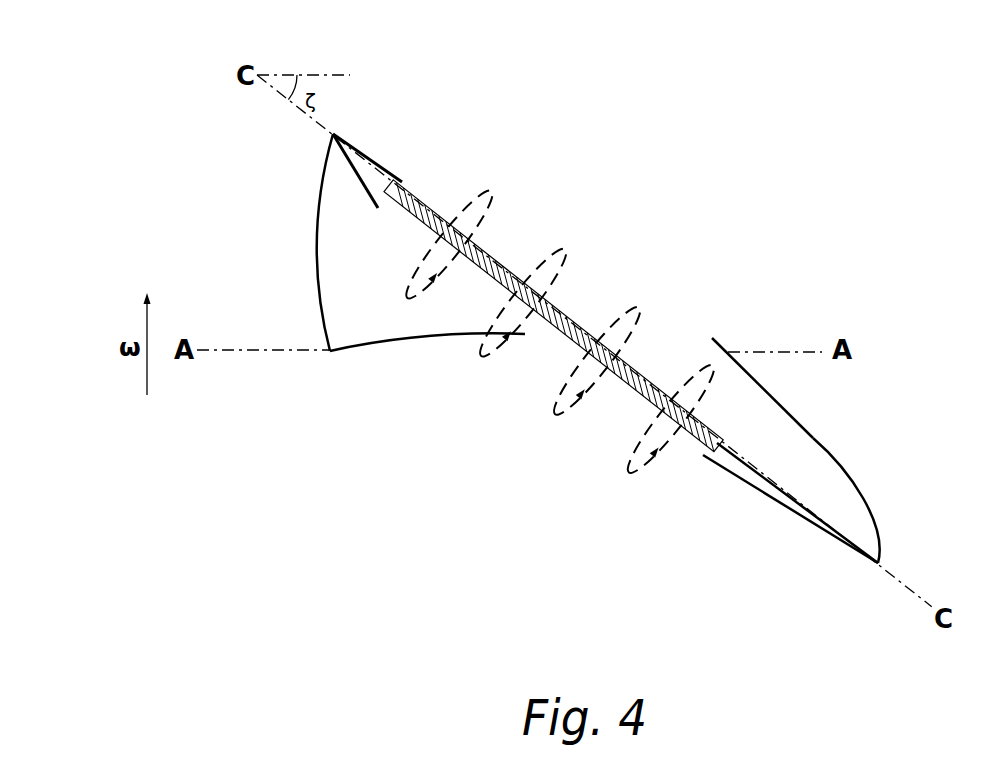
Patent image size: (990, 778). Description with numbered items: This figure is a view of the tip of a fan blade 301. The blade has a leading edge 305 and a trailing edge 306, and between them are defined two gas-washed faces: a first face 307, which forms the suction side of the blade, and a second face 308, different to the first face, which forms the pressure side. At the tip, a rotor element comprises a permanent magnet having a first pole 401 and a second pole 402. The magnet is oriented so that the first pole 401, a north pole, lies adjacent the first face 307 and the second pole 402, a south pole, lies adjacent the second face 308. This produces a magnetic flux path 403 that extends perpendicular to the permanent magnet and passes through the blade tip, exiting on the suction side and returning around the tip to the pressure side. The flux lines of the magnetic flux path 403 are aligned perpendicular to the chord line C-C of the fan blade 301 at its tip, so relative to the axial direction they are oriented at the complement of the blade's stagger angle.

The fan blade 301 is at (171, 91).
The leading edge 305 is at (316, 193).
The trailing edge 306 is at (880, 490).
The first face 307 is at (343, 272).
The second face 308 is at (803, 448).
The first pole 401 is at (618, 400).
The second pole 402 is at (496, 265).
The magnetic flux path 403 is at (485, 368).